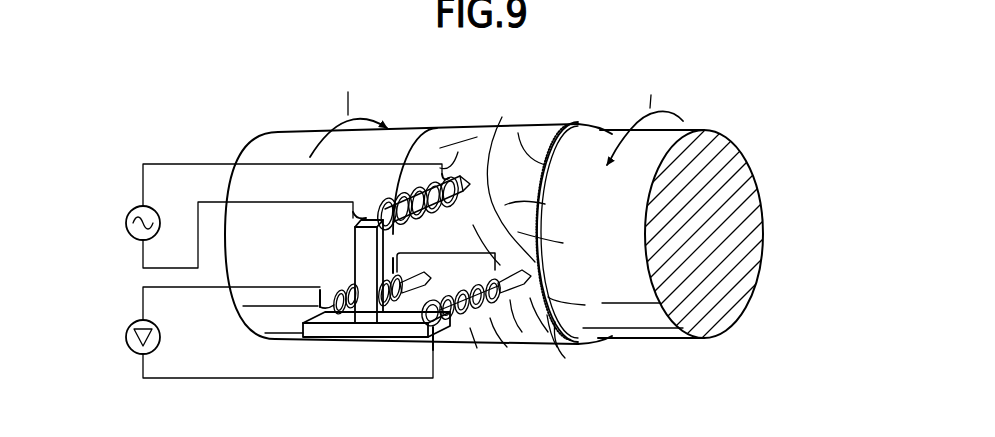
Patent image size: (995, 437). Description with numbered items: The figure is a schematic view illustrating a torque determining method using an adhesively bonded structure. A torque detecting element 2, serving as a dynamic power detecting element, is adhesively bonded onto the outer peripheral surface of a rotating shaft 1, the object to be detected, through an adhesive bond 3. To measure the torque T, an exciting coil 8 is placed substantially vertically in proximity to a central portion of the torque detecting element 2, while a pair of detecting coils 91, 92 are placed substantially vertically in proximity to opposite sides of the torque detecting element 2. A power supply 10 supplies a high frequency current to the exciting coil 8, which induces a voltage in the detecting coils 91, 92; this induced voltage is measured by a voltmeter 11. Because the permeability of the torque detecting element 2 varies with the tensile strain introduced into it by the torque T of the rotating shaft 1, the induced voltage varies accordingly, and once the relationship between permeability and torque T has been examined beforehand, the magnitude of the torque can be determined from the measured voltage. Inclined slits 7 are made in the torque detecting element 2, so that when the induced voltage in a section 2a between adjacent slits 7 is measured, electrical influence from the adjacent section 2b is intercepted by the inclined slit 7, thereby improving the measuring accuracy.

The rotating shaft 1 is at (657, 325).
The torque detecting element 2 is at (502, 128).
The section between adjacent slits 2a is at (405, 250).
The adjacent section 2b is at (545, 204).
The adhesive bond 3 is at (558, 169).
The inclined slits 7 is at (458, 152).
The exciting coil 8 is at (387, 200).
The detecting coil 91 is at (350, 287).
The detecting coil 92 is at (468, 327).
The power supply 10 is at (126, 223).
The voltmeter 11 is at (126, 337).
The torque T is at (496, 117).